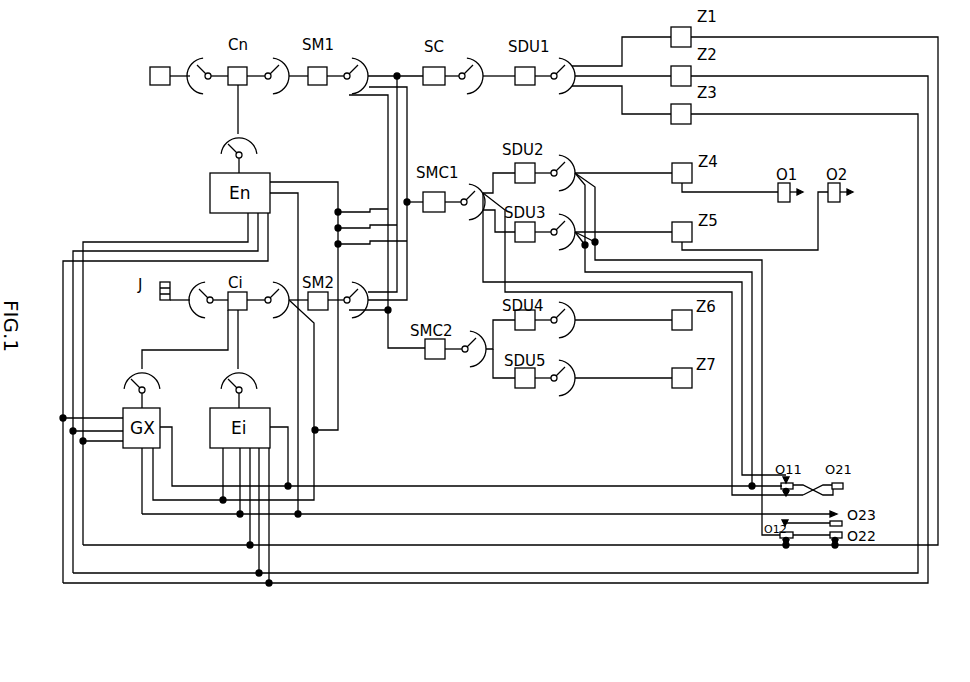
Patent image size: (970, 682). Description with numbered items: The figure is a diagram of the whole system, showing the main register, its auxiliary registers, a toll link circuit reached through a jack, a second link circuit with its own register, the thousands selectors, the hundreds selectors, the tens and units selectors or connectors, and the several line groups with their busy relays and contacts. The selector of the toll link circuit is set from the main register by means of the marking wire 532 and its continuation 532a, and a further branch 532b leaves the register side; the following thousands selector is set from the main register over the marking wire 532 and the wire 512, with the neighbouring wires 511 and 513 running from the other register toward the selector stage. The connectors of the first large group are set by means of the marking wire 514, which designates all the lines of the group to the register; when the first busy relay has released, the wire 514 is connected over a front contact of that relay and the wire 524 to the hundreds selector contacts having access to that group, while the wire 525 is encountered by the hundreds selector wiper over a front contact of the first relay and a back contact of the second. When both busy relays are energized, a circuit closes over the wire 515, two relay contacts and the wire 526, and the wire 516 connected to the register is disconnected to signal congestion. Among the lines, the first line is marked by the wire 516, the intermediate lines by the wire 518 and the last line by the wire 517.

The control line from En to SM1 branch 511 is at (363, 206).
The marking wire 512 is at (367, 222).
The control line from En to SM1 branch 513 is at (372, 238).
The marking wire 514 is at (782, 355).
The wire 515 is at (489, 508).
The wire 516 is at (510, 286).
The wire 517 is at (495, 337).
The wire 518 is at (495, 333).
The wire 524 is at (732, 402).
The wire 525 is at (742, 378).
The wire 526 is at (762, 332).
The marking wire 532 is at (223, 467).
The marking wire 532a is at (314, 348).
The connection line from GX 532b is at (150, 480).